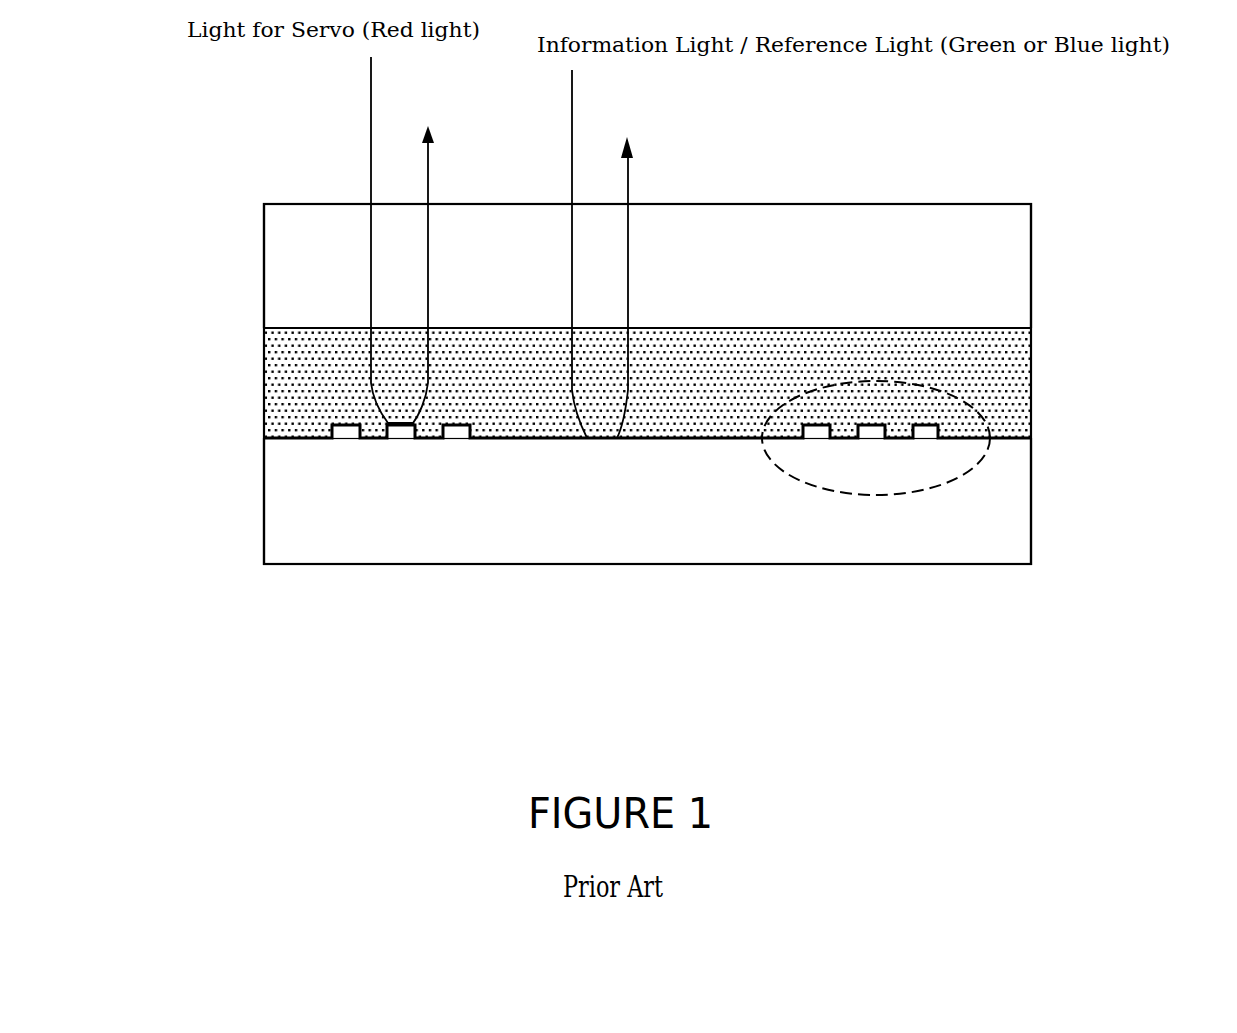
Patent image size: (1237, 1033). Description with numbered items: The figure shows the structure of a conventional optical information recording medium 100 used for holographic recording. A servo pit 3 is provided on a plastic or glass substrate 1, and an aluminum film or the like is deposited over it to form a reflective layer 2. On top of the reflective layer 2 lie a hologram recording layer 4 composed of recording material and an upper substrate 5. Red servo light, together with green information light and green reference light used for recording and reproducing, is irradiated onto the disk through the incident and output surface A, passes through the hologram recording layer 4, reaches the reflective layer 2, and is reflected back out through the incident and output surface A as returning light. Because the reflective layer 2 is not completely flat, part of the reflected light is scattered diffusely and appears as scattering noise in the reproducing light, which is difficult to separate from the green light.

The substrate 1 is at (980, 537).
The reflective layer 2 is at (287, 424).
The servo pit 3 is at (975, 468).
The hologram recording layer 4 is at (1005, 393).
The substrate 5 is at (873, 231).
The optical information recording medium 100 is at (1122, 212).
The incident and output surface A is at (1017, 205).